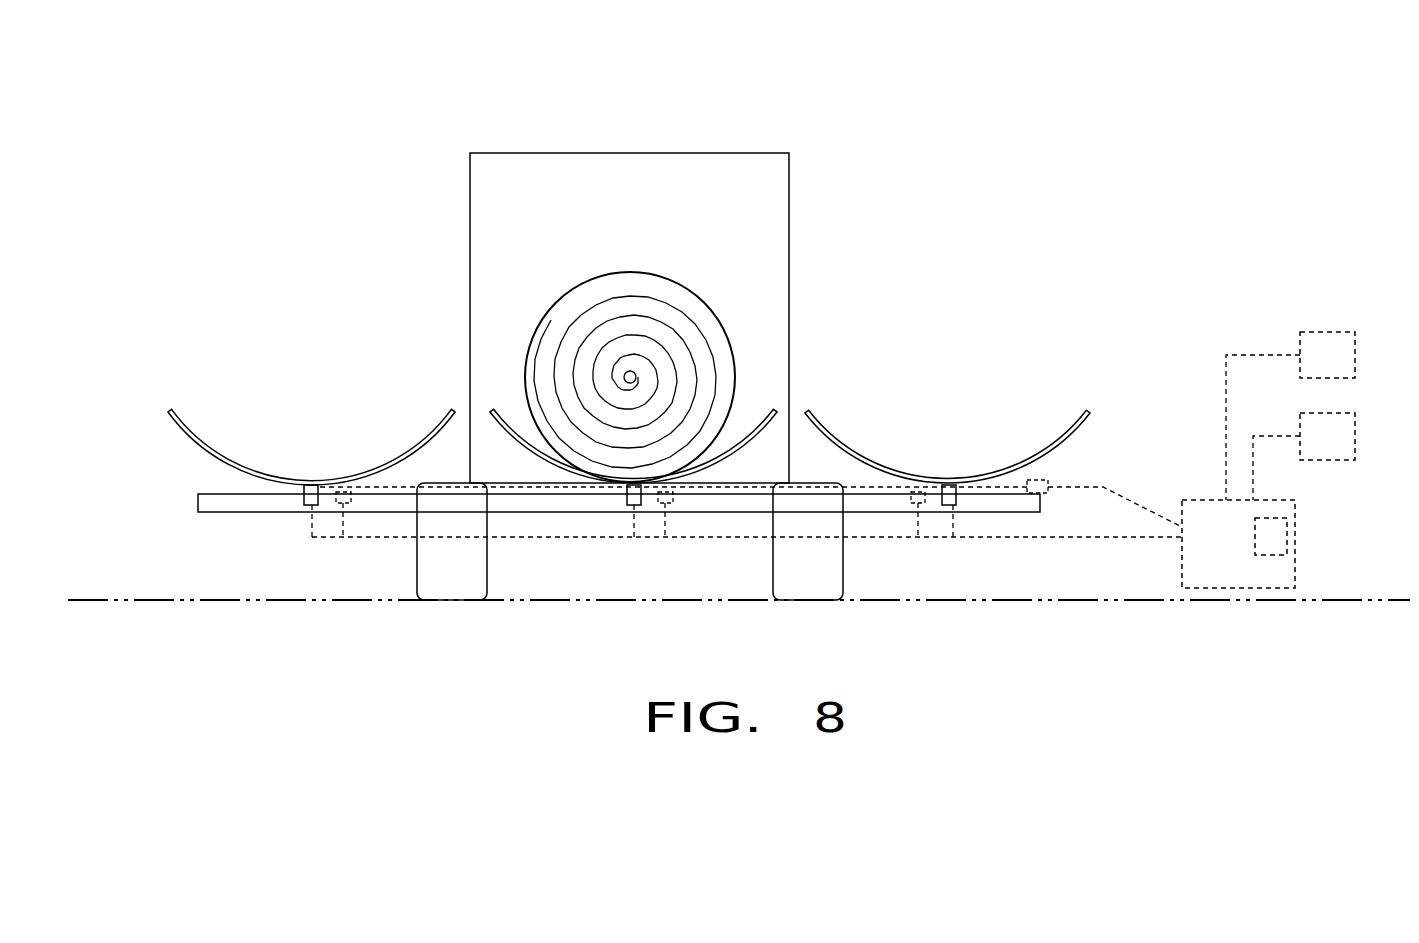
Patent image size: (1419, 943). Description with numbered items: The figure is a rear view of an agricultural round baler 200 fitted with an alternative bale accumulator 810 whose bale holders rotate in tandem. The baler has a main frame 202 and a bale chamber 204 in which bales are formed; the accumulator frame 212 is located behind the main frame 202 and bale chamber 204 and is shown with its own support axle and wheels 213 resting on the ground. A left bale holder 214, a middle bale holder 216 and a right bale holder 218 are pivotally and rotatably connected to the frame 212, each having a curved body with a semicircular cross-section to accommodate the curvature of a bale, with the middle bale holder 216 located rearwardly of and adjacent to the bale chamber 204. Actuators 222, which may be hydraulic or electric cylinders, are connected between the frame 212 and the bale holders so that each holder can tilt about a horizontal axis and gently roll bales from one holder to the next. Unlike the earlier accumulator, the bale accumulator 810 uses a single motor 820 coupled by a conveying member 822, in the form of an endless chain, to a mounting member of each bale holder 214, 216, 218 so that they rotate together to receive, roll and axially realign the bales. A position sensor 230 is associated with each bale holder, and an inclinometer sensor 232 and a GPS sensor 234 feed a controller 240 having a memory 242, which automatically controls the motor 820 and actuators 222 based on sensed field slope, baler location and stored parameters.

The agricultural round baler 200 is at (887, 127).
The main frame 202 is at (688, 153).
The bale chamber 204 is at (778, 202).
The frame 212 is at (213, 508).
The support axle and wheels 213 is at (452, 592).
The left bale holder 214 is at (190, 430).
The middle bale holder 216 is at (753, 427).
The right bale holder 218 is at (830, 430).
The actuators 222 is at (309, 507).
The position sensor 230 is at (342, 504).
The inclinometer sensor 232 is at (1325, 332).
The GPS sensor 234 is at (1338, 460).
The controller 240 is at (1182, 570).
The memory 242 is at (1287, 542).
The bale accumulator 810 is at (268, 320).
The motor 820 is at (1048, 482).
The conveying member 822 is at (872, 486).